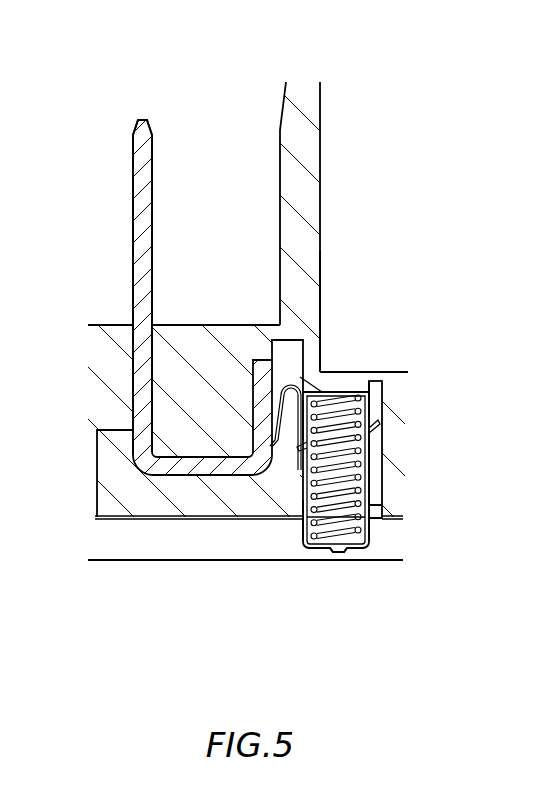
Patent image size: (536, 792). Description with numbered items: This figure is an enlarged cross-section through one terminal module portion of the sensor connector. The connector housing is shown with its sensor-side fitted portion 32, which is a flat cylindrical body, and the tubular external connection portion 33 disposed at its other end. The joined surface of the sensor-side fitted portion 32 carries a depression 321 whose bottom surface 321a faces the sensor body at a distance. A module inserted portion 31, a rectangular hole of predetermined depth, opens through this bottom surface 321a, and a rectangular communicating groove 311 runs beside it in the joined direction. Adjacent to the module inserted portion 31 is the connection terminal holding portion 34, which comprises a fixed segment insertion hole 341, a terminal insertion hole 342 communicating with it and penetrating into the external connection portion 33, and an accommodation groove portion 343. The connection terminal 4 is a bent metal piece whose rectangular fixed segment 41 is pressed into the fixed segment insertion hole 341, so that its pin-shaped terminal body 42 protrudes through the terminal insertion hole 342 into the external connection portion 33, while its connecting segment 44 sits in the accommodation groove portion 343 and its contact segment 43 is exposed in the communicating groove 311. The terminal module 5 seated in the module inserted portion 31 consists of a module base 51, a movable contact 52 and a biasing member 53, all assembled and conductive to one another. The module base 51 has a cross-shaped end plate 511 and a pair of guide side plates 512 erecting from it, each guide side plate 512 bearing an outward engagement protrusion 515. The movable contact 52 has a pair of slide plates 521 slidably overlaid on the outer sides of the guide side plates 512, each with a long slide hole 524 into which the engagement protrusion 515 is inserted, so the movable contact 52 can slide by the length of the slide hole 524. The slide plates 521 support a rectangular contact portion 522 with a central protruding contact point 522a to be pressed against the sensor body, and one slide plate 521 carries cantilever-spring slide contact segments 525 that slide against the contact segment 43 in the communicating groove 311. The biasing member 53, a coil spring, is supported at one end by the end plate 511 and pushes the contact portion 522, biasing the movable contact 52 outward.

The connection terminal 4 is at (268, 396).
The fixed segment 41 is at (133, 437).
The terminal body 42 is at (152, 218).
The contact segment 43 is at (300, 352).
The connecting segment 44 is at (200, 468).
The terminal module 5 is at (335, 454).
The module base 51 is at (378, 400).
The end plate 511 is at (333, 389).
The guide side plate 512 is at (372, 402).
The engagement protrusion 515 is at (373, 440).
The movable contact 52 is at (370, 553).
The slide plate 521 is at (372, 528).
The contact portion 522 is at (313, 552).
The contact point 522a is at (338, 553).
The slide hole 524 is at (378, 462).
The slide contact segment 525 is at (254, 358).
The biasing member 53 is at (380, 507).
The module inserted portion 31 is at (383, 392).
The sensor-side fitted portion 32 is at (358, 371).
The external connection portion 33 is at (320, 222).
The connection terminal holding portion 34 is at (140, 490).
The communicating groove 311 is at (320, 315).
The depression 321 is at (392, 550).
The bottom surface 321a is at (97, 519).
The fixed segment insertion hole 341 is at (133, 400).
The terminal insertion hole 342 is at (151, 333).
The accommodation groove portion 343 is at (185, 458).